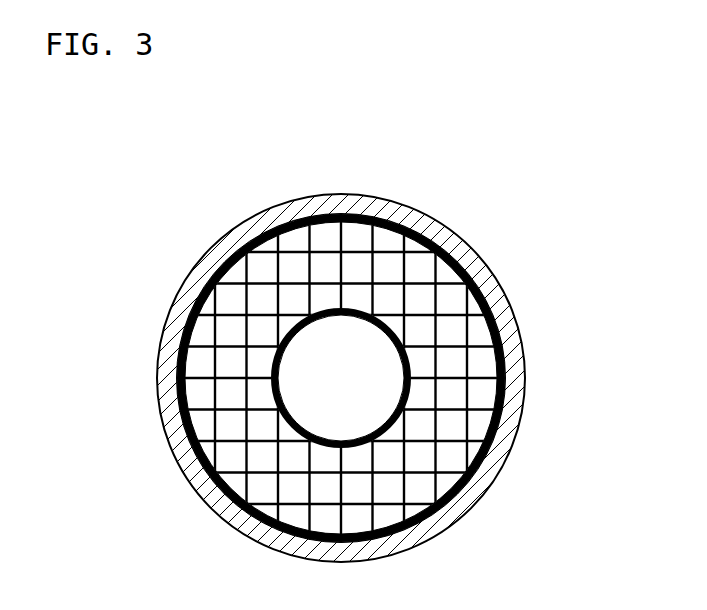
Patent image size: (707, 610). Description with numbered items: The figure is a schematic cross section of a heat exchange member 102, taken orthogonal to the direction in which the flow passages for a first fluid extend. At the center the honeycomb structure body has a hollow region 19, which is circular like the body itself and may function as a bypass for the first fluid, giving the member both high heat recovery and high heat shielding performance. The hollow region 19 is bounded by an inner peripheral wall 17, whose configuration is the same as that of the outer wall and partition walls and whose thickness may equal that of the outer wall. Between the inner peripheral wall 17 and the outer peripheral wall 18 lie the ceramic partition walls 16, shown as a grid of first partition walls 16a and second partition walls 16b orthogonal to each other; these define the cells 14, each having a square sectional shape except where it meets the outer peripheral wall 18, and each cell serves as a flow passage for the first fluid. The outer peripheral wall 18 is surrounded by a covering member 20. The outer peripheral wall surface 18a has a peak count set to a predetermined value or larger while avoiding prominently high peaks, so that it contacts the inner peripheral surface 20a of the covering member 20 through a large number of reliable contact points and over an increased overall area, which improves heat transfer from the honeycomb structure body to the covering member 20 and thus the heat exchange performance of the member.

The heat exchange member 102 is at (580, 197).
The cells 14 is at (288, 301).
The partition walls 16 is at (340, 326).
The first partition walls 16a is at (343, 268).
The second partition walls 16b is at (388, 283).
The inner peripheral wall 17 is at (400, 417).
The outer peripheral wall 18 is at (247, 242).
The outer peripheral wall surface 18a is at (273, 228).
The hollow region 19 is at (323, 383).
The covering member 20 is at (512, 325).
The inner peripheral surface 20a is at (512, 358).